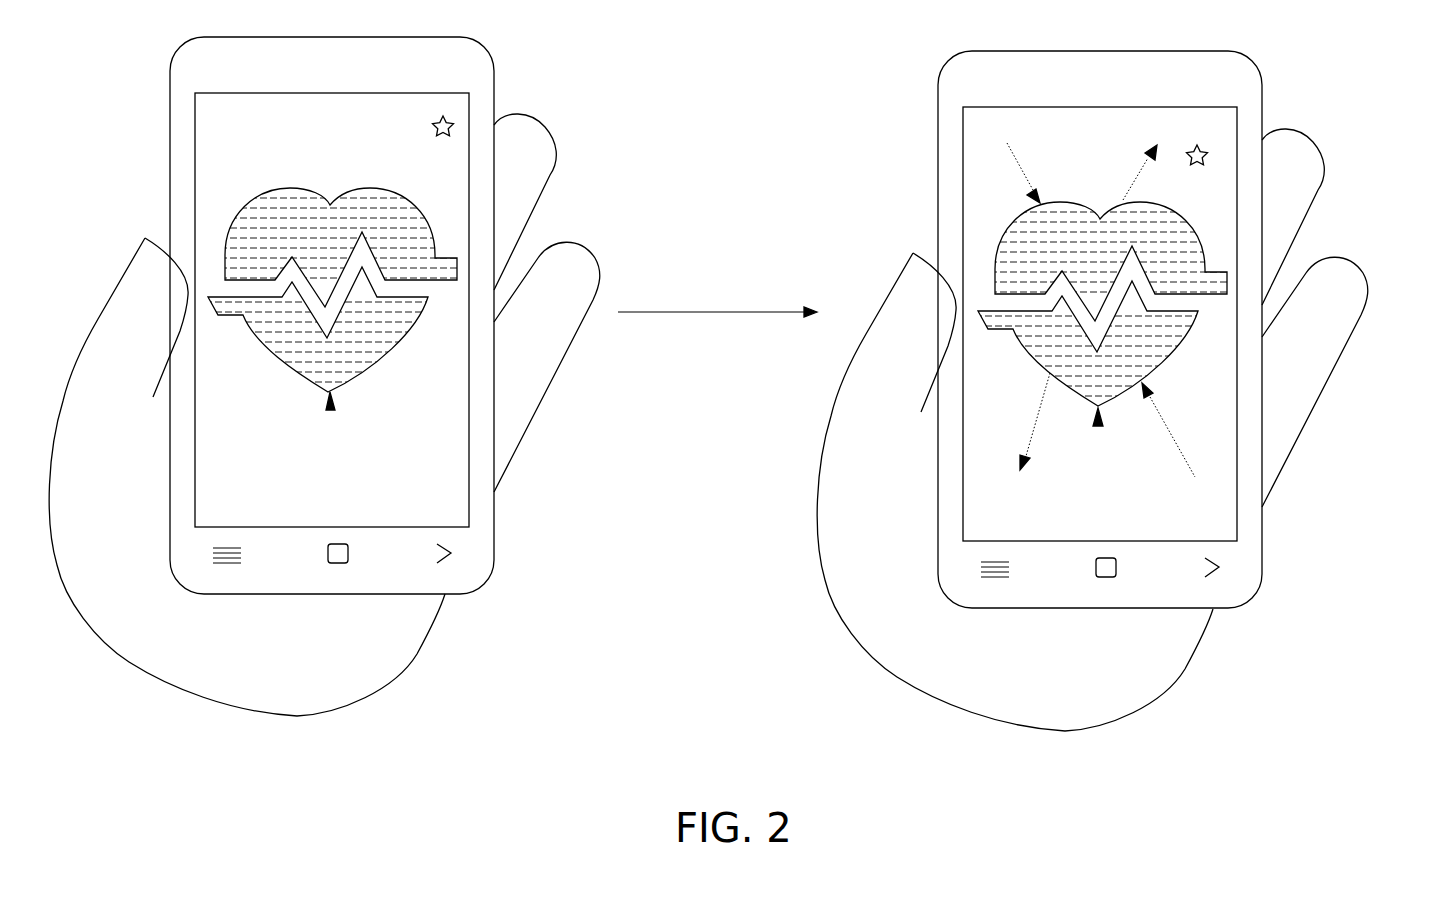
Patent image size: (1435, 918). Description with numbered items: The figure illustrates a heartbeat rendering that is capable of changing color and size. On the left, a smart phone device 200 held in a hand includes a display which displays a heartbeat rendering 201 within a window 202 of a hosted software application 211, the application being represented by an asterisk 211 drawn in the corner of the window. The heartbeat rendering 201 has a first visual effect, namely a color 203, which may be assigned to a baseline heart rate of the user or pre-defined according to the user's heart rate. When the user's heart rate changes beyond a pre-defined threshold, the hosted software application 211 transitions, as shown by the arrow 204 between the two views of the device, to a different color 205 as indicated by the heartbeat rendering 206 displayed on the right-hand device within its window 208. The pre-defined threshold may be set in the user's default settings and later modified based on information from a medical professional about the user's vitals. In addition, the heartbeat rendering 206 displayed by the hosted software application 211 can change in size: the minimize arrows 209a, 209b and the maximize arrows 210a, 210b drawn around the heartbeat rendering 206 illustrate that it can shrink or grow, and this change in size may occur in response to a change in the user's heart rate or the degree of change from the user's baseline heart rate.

The smart phone device 200 is at (455, 597).
The heartbeat rendering 201 is at (331, 403).
The window 202 is at (453, 442).
The color 203 is at (292, 235).
The arrow 204 is at (710, 312).
The different color 205 is at (1055, 250).
The heartbeat rendering 206 is at (1098, 420).
The display screen (second state) 208 is at (1222, 487).
The minimize arrow 209a is at (1011, 154).
The minimize arrow 209b is at (1177, 448).
The maximize arrow 210a is at (1033, 428).
The maximize arrow 210b is at (1123, 200).
The hosted software application 211 is at (452, 122).